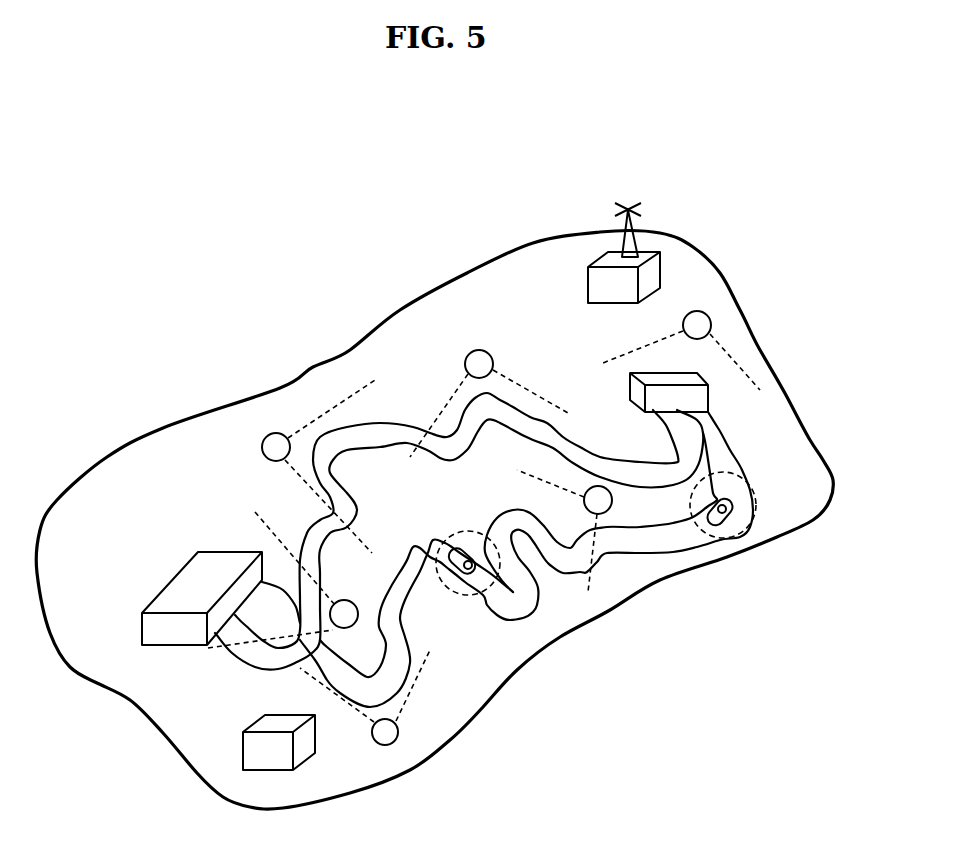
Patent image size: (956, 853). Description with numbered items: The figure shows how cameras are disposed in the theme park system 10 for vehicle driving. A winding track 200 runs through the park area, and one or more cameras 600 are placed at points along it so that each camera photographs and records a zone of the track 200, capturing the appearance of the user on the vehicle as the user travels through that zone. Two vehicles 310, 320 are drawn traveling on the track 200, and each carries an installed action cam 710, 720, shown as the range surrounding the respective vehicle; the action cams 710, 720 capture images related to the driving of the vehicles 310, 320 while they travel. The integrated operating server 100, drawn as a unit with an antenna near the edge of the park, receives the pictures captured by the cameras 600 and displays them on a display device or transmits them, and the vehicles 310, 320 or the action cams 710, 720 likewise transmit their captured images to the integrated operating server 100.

The theme park system for vehicle driving 10 is at (138, 260).
The integrated operating server 100 is at (588, 288).
The track 200 is at (410, 428).
The vehicle 310 is at (450, 552).
The vehicle 320 is at (729, 527).
The camera 600 is at (274, 433).
The action cam 710 is at (478, 598).
The action cam 720 is at (728, 498).